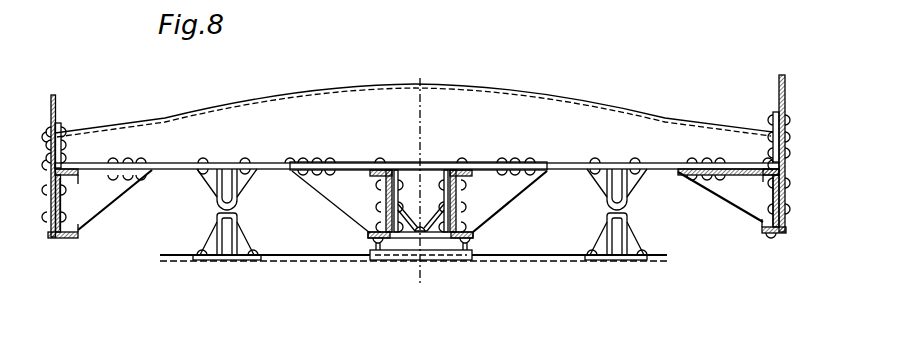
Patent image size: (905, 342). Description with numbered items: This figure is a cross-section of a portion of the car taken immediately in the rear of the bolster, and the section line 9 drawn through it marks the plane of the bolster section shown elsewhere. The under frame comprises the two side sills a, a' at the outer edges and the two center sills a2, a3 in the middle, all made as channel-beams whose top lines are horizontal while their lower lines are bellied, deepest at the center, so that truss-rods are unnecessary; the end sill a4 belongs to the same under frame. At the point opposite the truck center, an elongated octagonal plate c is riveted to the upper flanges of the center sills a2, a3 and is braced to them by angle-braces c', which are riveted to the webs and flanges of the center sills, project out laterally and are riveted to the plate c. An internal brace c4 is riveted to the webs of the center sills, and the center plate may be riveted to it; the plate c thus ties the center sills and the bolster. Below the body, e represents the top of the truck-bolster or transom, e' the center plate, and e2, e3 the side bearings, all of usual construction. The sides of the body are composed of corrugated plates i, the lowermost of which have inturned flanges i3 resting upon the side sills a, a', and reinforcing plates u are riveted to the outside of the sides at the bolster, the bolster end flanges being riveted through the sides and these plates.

The section line 9- 9 is at (417, 182).
The side sill a is at (407, 163).
The center sill a2 is at (356, 233).
The center sill a3 is at (62, 128).
The end sill a4 is at (98, 204).
The side sill a' is at (435, 190).
The side plate i is at (58, 110).
The inturned flange i3 is at (80, 168).
The reinforcing plate u is at (50, 167).
The plate c is at (421, 182).
The internal brace c4 is at (403, 218).
The angle-brace c' is at (423, 202).
The top of truck-bolster or transom e is at (413, 247).
The center plate e' is at (421, 268).
The side bearing e2 is at (218, 217).
The side bearing e3 is at (220, 193).